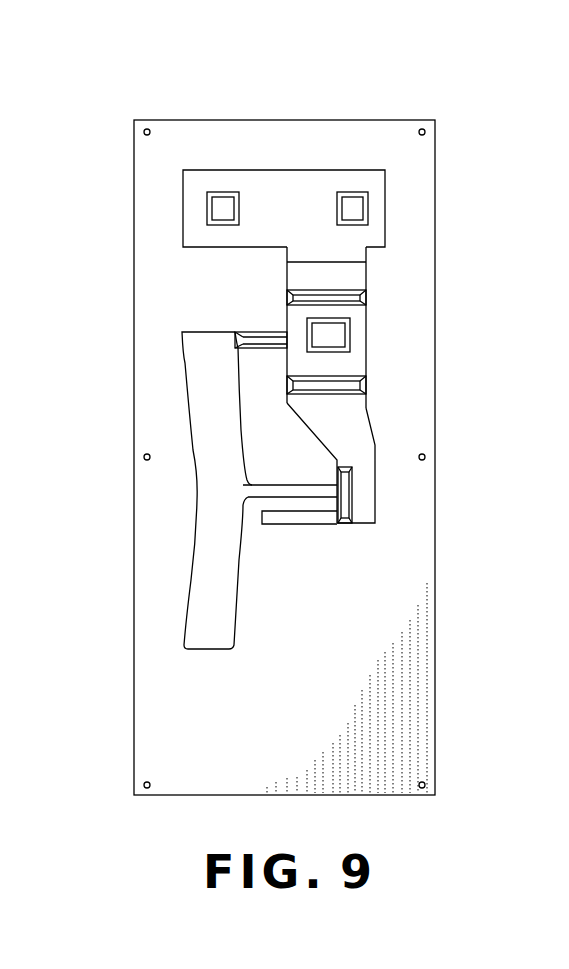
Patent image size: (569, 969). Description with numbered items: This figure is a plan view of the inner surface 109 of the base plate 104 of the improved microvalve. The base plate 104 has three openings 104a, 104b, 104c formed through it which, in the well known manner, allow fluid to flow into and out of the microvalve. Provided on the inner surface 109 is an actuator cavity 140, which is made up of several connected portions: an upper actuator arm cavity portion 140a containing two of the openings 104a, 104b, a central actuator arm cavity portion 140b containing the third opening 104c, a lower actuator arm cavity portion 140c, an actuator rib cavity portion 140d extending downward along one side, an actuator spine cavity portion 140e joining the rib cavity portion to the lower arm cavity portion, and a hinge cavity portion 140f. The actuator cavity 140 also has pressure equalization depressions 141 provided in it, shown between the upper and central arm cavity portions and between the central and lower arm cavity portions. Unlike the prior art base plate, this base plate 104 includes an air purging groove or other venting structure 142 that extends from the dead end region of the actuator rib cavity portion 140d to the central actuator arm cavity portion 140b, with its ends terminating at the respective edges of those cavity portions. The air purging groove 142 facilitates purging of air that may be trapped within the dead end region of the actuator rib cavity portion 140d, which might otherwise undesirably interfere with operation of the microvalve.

The base plate 104 is at (193, 120).
The inner surface 109 is at (395, 135).
The actuator cavity 140 is at (310, 182).
The upper actuator arm cavity portion 140a is at (292, 214).
The central actuator arm cavity portion 140b is at (419, 327).
The lower actuator arm cavity portion 140c is at (350, 433).
The actuator rib cavity portion 140d is at (200, 363).
The actuator spine cavity portion 140e is at (278, 488).
The hinge cavity portion 140f is at (300, 517).
The pressure equalization depression 141 is at (343, 292).
The air purging groove 142 is at (250, 332).
The opening 104a is at (223, 205).
The opening 104b is at (352, 209).
The opening 104c is at (333, 338).